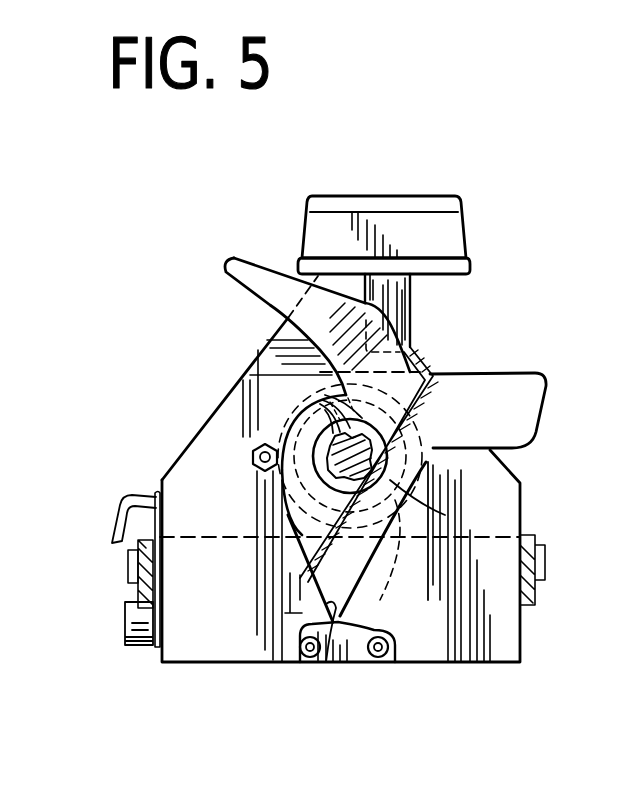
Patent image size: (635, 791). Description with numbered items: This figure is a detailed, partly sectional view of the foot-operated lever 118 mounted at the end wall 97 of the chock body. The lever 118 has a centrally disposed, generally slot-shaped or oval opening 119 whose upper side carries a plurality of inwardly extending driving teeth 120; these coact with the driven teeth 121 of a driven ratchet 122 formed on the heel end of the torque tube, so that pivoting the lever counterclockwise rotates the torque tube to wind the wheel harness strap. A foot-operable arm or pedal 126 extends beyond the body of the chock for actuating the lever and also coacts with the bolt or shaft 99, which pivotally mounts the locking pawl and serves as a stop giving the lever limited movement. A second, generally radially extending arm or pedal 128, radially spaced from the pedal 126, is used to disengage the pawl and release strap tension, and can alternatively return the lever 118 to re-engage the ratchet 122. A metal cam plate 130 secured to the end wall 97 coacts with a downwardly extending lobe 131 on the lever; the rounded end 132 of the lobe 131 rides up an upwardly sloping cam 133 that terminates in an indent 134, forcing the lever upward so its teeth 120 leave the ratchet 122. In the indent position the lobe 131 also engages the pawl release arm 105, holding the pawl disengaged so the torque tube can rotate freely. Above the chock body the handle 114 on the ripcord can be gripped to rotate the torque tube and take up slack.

The end wall 97 is at (430, 640).
The bolt or shaft 99 is at (252, 452).
The arm 105 is at (286, 570).
The handle 114 is at (430, 200).
The foot-operated lever 118 is at (486, 372).
The opening 119 is at (393, 434).
The driving teeth 120 is at (322, 396).
The driven teeth 121 is at (436, 471).
The driven ratchet 122 is at (446, 515).
The foot-operable arm or pedal 126 is at (246, 262).
The radially extending arm or pedal 128 is at (533, 393).
The cam plate 130 is at (365, 662).
The lobe 131 is at (382, 556).
The rounded end 132 is at (337, 628).
The cam 133 is at (372, 630).
The indent 134 is at (325, 640).